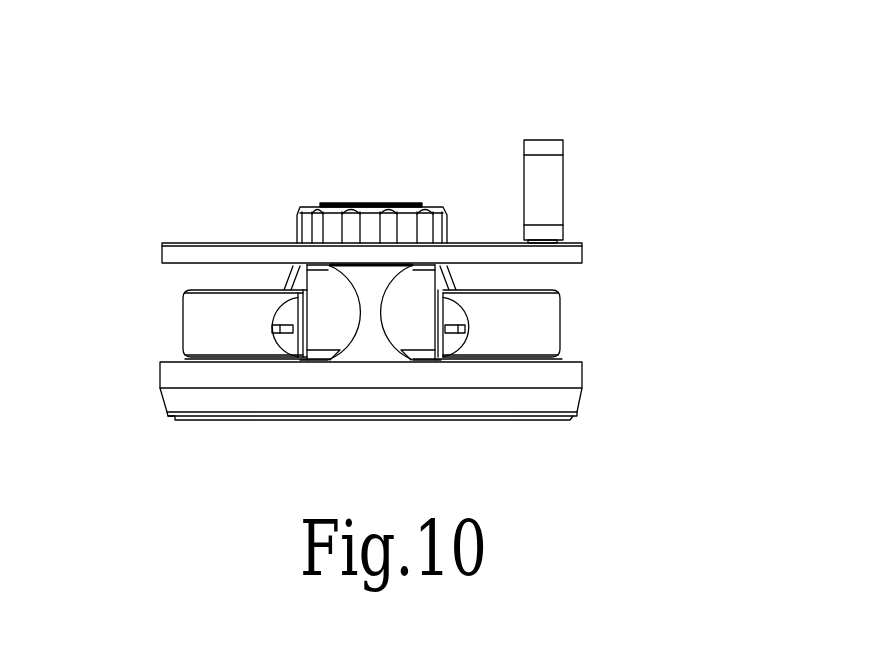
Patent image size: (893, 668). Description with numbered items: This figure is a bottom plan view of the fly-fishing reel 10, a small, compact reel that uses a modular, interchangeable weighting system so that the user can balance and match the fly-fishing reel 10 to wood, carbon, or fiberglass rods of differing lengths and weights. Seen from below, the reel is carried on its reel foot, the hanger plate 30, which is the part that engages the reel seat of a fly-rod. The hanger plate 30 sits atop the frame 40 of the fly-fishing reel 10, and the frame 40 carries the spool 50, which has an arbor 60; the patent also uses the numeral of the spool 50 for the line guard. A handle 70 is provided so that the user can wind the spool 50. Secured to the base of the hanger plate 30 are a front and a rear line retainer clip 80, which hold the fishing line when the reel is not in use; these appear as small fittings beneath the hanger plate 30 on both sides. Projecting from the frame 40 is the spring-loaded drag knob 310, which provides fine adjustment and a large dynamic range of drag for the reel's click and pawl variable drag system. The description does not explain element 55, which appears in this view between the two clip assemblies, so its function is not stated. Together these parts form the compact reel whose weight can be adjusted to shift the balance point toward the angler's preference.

The fly-fishing reel 10 is at (644, 110).
The hanger plate 30 is at (193, 303).
The frame 40 is at (581, 423).
The spool 50 is at (174, 230).
The ball socket coupling 55 is at (373, 340).
The arbor 60 is at (417, 310).
The handle 70 is at (547, 179).
The line retainer clip 80 is at (272, 328).
The drag knob 310 is at (387, 220).